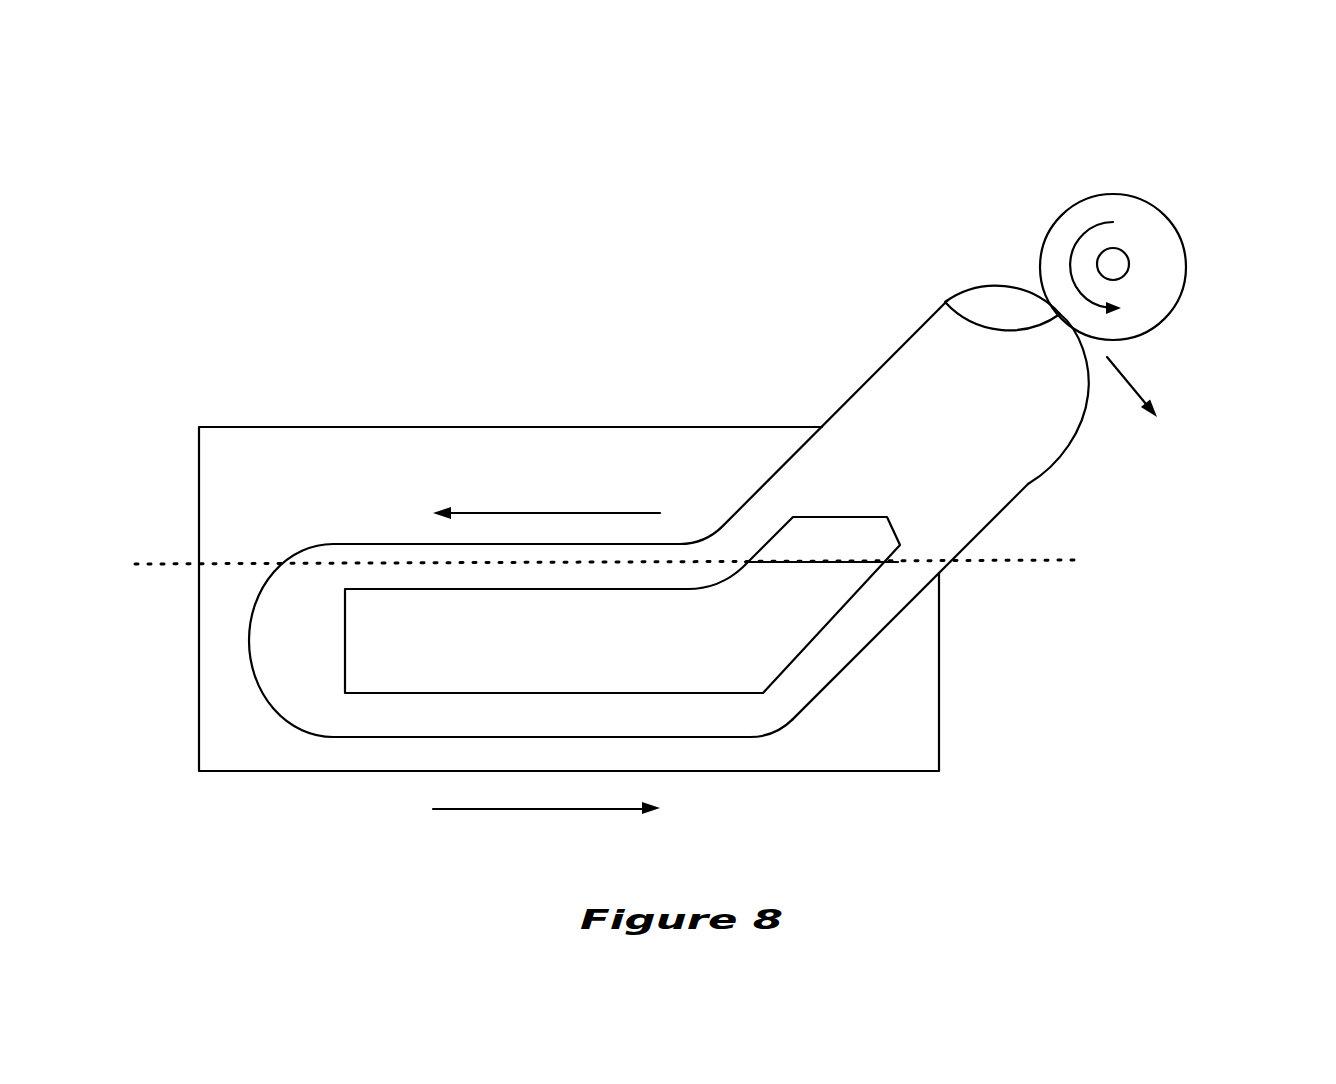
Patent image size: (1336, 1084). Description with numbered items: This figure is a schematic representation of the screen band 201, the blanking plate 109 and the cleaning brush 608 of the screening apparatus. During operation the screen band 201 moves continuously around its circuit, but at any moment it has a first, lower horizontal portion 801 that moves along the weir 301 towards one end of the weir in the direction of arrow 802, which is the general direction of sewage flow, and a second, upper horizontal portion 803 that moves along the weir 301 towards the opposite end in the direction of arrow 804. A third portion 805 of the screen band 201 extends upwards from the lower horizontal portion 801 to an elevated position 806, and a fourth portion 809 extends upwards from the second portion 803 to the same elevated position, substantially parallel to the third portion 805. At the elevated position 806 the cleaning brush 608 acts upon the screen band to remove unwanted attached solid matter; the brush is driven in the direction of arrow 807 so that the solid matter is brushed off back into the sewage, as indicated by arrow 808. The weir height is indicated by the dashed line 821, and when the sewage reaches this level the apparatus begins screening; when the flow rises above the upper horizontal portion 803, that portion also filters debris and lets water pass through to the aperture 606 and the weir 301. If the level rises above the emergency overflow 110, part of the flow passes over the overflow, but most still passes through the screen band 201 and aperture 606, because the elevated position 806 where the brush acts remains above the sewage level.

The emergency overflow 110 is at (298, 427).
The blanking plate 109 is at (678, 463).
The second horizontal portion 803 is at (628, 542).
The arrow 804 is at (542, 510).
The fourth portion 809 is at (885, 358).
The elevated position 806 is at (958, 310).
The third portion 805 is at (940, 571).
The screen band 201 is at (705, 738).
The first horizontal portion 801 is at (427, 738).
The arrow 802 is at (487, 810).
The aperture 606 is at (787, 673).
The weir 301 is at (870, 556).
The dashed line 821 is at (1033, 561).
The cleaning brush 608 is at (1138, 217).
The arrow 807 is at (1073, 255).
The arrow 808 is at (1128, 382).